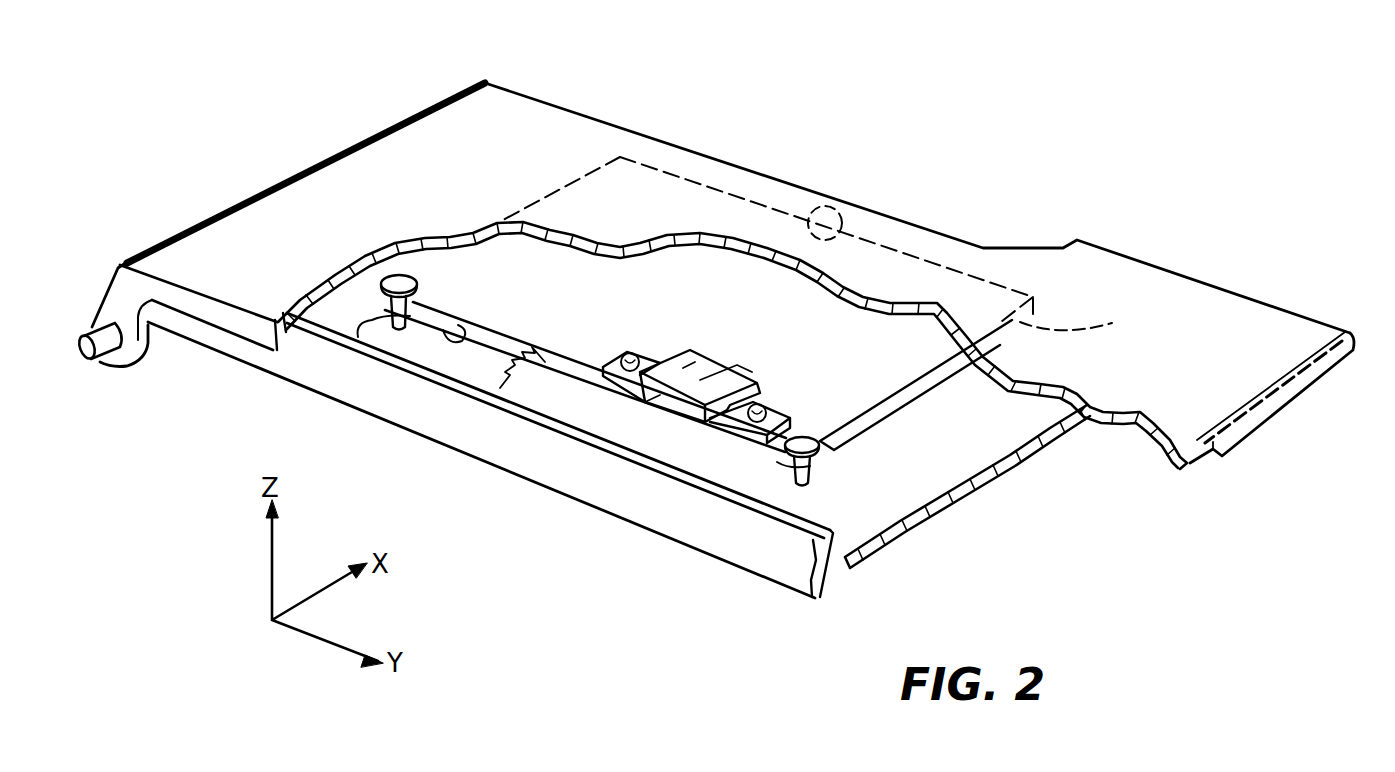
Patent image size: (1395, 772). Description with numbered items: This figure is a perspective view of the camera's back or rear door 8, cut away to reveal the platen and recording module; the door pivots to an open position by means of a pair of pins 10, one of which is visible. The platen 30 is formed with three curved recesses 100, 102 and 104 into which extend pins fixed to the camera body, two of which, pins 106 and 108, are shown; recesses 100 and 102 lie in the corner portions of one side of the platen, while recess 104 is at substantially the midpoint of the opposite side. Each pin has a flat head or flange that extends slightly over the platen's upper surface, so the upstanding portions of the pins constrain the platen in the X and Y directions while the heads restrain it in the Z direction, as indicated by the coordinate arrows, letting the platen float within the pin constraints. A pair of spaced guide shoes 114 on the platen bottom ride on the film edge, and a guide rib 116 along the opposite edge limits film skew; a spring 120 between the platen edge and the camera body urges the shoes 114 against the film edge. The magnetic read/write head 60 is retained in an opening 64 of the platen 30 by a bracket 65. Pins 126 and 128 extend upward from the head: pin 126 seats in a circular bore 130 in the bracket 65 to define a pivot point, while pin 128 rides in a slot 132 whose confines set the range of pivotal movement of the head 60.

The back or rear door 8 is at (545, 122).
The pin 10 is at (85, 360).
The platen 30 is at (772, 319).
The magnetic read/write head 60 is at (663, 410).
The opening 64 is at (707, 433).
The bracket 65 is at (723, 387).
The curved recess 100 is at (417, 327).
The curved recess 102 is at (780, 470).
The curved recess 104 is at (877, 220).
The pin 106 is at (362, 343).
The pin 108 is at (810, 463).
The guide shoe 114 is at (470, 330).
The guide rib 116 is at (1086, 324).
The spring 120 is at (507, 363).
The pin 126 is at (670, 370).
The pin 128 is at (698, 380).
The circular bore 130 is at (697, 400).
The slot 132 is at (677, 370).